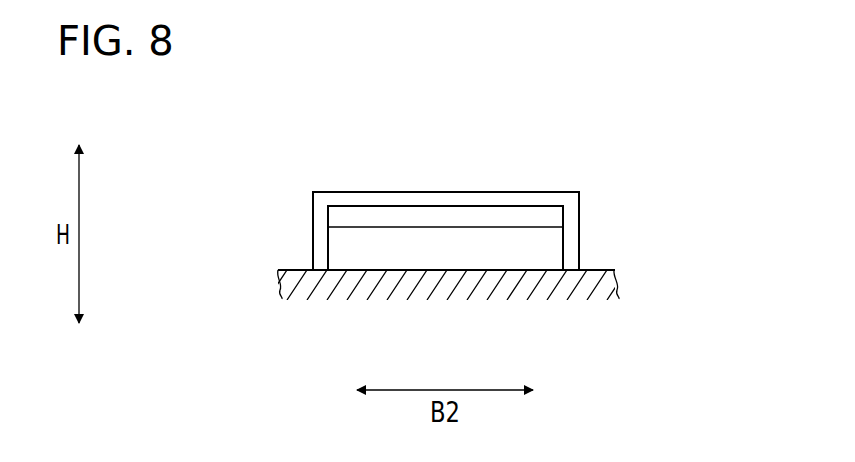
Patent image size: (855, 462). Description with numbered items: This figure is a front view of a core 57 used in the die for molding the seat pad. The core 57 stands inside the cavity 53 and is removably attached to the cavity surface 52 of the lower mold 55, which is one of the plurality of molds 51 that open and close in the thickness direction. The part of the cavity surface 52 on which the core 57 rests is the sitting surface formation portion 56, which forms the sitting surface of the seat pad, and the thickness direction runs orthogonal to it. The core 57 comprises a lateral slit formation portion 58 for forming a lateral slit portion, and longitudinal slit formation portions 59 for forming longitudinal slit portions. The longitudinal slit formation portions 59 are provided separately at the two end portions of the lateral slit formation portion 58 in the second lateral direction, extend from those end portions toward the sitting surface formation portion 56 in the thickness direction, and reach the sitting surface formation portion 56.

The molds 51 is at (439, 267).
The cavity surface 52 is at (501, 248).
The cavity 53 is at (285, 166).
The lower mold 55 is at (439, 267).
The sitting surface formation portion 56 is at (593, 270).
The core 57 is at (563, 105).
The lateral slit formation portion 58 is at (437, 192).
The longitudinal slit formation portion 59 is at (312, 242).